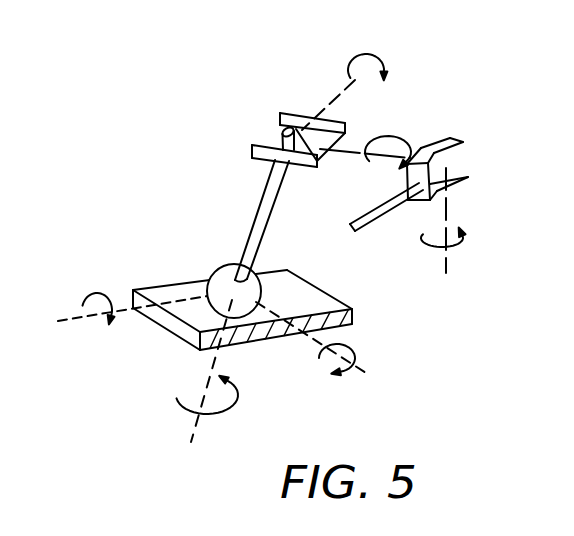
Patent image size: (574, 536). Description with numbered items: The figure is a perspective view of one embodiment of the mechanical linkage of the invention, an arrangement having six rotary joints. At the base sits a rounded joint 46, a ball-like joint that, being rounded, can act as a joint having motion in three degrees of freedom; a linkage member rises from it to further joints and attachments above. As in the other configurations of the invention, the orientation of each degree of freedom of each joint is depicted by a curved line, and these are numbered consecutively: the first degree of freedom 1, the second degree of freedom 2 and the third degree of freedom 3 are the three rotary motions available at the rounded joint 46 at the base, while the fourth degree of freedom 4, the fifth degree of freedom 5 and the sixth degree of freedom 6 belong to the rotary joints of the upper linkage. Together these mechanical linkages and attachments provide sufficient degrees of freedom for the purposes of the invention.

The first degree of freedom 1 is at (125, 317).
The second degree of freedom 2 is at (207, 386).
The third degree of freedom 3 is at (321, 344).
The fourth degree of freedom 4 is at (345, 76).
The fifth degree of freedom 5 is at (370, 136).
The sixth degree of freedom 6 is at (455, 220).
The rounded joint 46 is at (222, 272).